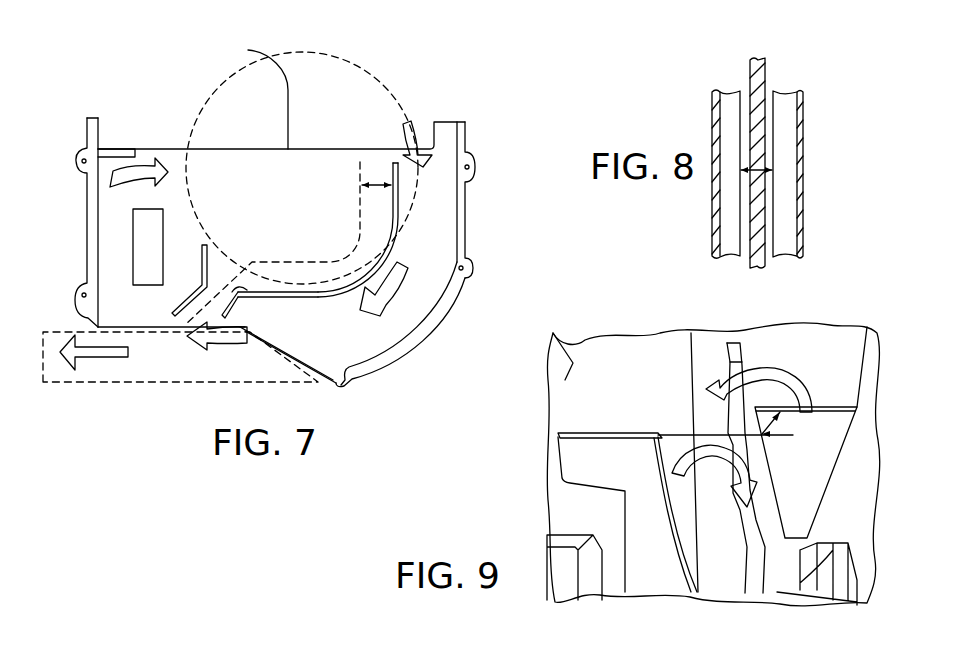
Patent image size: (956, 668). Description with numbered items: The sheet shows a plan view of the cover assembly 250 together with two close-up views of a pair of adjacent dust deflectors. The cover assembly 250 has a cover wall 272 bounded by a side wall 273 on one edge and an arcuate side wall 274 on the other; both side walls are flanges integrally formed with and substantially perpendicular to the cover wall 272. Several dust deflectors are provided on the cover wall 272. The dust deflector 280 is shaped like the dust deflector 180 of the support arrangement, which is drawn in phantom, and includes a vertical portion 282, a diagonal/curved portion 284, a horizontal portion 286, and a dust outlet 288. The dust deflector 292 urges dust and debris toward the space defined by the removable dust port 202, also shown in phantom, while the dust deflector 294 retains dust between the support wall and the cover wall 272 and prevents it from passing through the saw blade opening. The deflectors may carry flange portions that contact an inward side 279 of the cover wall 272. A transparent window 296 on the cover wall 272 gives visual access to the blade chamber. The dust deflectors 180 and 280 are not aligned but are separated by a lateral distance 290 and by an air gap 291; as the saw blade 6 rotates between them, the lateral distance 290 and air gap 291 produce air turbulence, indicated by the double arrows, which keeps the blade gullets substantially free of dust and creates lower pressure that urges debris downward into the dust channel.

In FIG. 7, the saw blade 6 is at (362, 68).
In FIG. 8, the saw blade 6 is at (765, 61).
In FIG. 9, the saw blade 6 is at (733, 360).
In FIG. 7, the dust deflector 180 is at (350, 172).
In FIG. 8, the dust deflector 180 is at (704, 91).
In FIG. 9, the dust deflector 180 is at (825, 427).
In FIG. 7, the removable dust port 202 is at (42, 383).
In FIG. 7, the cover assembly 250 is at (100, 82).
In FIG. 7, the cover wall 272 is at (251, 94).
In FIG. 7, the side wall 273 is at (87, 218).
In FIG. 7, the side wall 274 is at (466, 130).
In FIG. 7, the inward side 279 is at (238, 172).
In FIG. 7, the dust deflector 280 is at (406, 184).
In FIG. 8, the dust deflector 280 is at (808, 90).
In FIG. 9, the dust deflector 280 is at (576, 456).
In FIG. 7, the vertical portion 282 is at (399, 203).
In FIG. 7, the diagonal/curved portion 284 is at (389, 257).
In FIG. 7, the horizontal portion 286 is at (312, 298).
In FIG. 7, the dust outlet 288 is at (243, 290).
In FIG. 7, the lateral distance 290 is at (378, 183).
In FIG. 8, the air gap 291 is at (766, 169).
In FIG. 9, the air gap 291 is at (768, 425).
In FIG. 7, the dust deflector 292 is at (183, 300).
In FIG. 7, the dust deflector 294 is at (112, 157).
In FIG. 7, the transparent window 296 is at (133, 209).